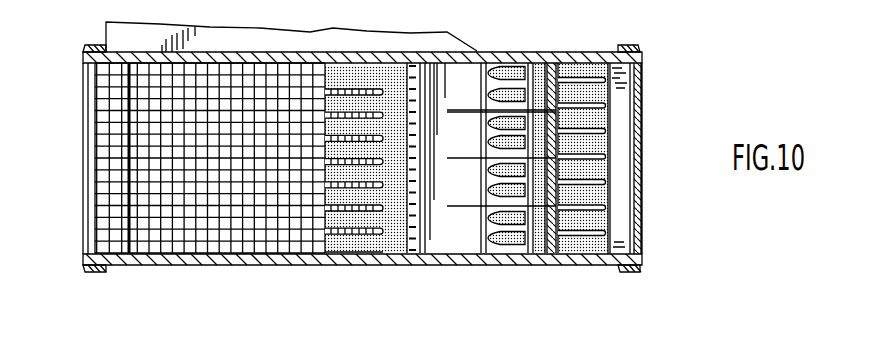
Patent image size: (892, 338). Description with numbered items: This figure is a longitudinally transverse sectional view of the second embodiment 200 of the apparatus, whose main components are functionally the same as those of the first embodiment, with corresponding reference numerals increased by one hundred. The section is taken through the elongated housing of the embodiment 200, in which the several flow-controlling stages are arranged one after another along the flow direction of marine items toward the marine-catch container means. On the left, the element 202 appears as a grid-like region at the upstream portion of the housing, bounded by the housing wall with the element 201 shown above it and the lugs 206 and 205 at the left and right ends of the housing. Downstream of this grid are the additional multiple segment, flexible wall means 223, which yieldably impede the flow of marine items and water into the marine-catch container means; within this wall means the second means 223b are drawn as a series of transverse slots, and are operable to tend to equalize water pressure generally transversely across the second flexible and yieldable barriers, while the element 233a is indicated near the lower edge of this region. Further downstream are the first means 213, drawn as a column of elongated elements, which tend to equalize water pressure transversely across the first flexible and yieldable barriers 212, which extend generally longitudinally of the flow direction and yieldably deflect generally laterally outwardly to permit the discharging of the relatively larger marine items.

The second embodiment 200 is at (574, 47).
The cover sheet 201 is at (482, 51).
The inlet screen 202 is at (182, 260).
The mounting lug 205 is at (640, 45).
The mounting lug 206 is at (88, 136).
The first flexible and yieldable barriers 212 is at (573, 247).
The first means 213 is at (515, 233).
The additional multiple segment, flexible wall means 223 is at (348, 182).
The second means 223b is at (323, 233).
The support strip 233a is at (339, 258).